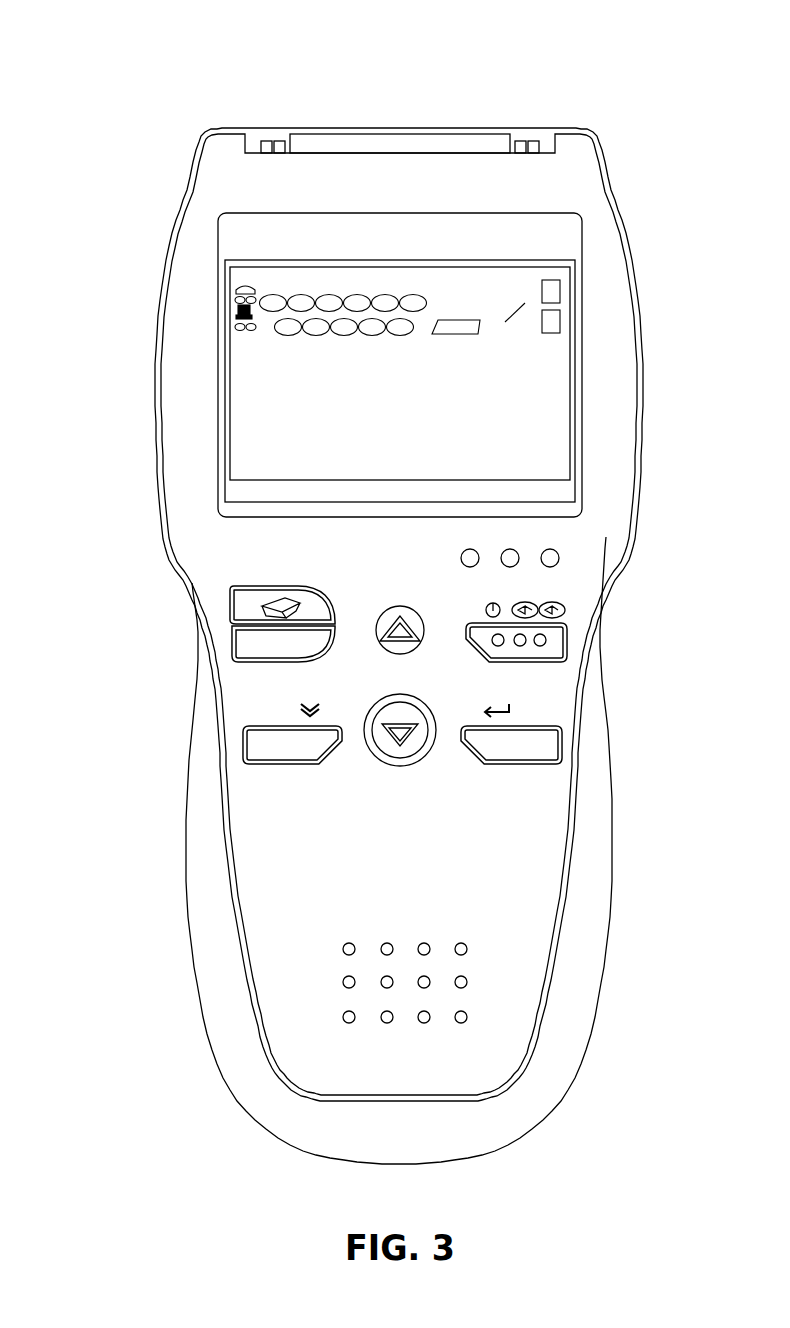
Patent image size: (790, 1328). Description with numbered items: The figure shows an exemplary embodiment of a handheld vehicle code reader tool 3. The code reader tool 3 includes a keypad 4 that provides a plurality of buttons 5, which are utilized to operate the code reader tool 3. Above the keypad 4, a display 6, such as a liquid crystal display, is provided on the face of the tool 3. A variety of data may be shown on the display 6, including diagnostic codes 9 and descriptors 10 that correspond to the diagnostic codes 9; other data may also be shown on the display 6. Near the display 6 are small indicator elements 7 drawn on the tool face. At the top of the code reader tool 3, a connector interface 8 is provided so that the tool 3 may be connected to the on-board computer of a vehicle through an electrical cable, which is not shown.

The handheld vehicle code reader tool 3 is at (680, 104).
The keypad 4 is at (606, 538).
The buttons 5 is at (387, 620).
The display 6 is at (578, 378).
The status indicator LEDs 7 is at (553, 552).
The connector interface 8 is at (418, 142).
The diagnostic codes 9 is at (237, 352).
The descriptors 10 is at (235, 395).